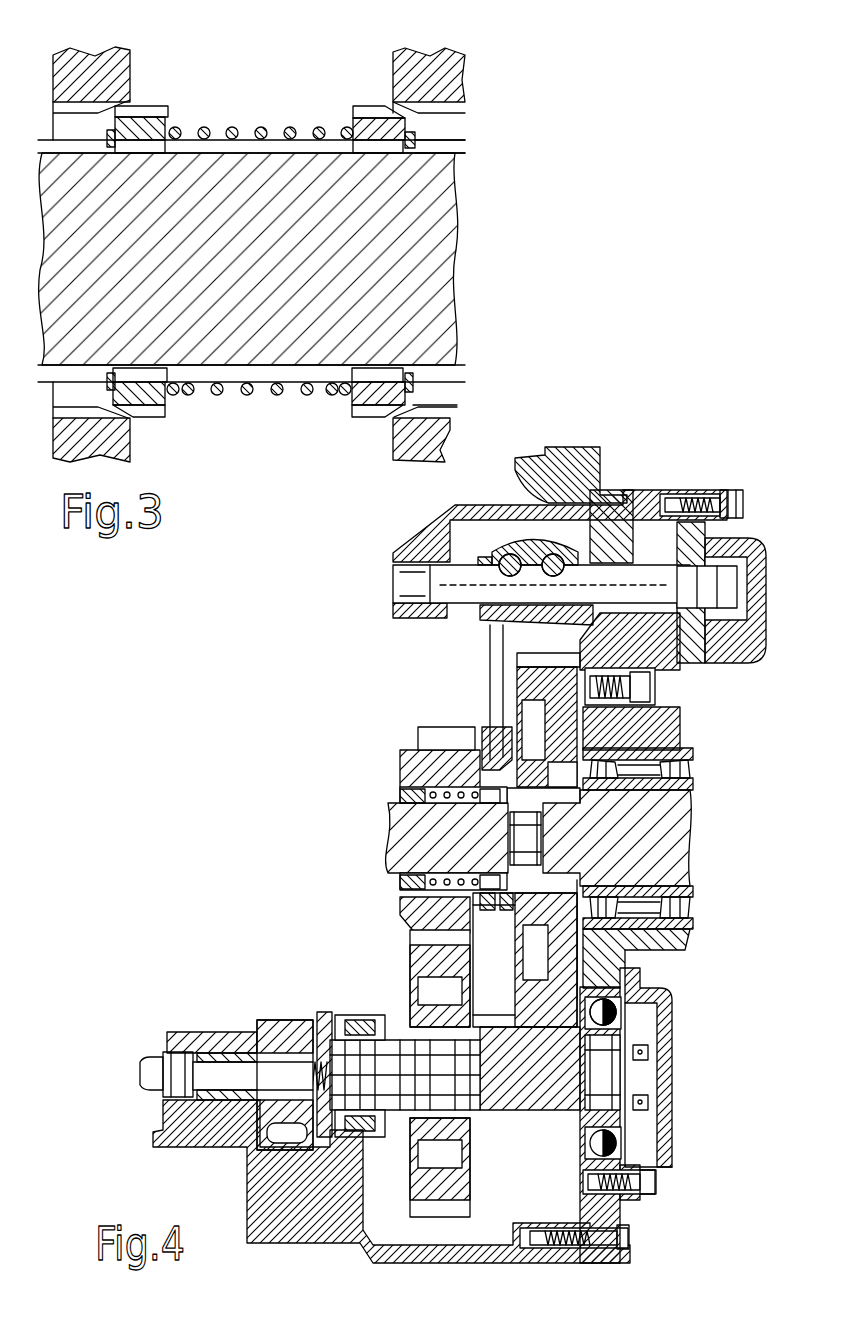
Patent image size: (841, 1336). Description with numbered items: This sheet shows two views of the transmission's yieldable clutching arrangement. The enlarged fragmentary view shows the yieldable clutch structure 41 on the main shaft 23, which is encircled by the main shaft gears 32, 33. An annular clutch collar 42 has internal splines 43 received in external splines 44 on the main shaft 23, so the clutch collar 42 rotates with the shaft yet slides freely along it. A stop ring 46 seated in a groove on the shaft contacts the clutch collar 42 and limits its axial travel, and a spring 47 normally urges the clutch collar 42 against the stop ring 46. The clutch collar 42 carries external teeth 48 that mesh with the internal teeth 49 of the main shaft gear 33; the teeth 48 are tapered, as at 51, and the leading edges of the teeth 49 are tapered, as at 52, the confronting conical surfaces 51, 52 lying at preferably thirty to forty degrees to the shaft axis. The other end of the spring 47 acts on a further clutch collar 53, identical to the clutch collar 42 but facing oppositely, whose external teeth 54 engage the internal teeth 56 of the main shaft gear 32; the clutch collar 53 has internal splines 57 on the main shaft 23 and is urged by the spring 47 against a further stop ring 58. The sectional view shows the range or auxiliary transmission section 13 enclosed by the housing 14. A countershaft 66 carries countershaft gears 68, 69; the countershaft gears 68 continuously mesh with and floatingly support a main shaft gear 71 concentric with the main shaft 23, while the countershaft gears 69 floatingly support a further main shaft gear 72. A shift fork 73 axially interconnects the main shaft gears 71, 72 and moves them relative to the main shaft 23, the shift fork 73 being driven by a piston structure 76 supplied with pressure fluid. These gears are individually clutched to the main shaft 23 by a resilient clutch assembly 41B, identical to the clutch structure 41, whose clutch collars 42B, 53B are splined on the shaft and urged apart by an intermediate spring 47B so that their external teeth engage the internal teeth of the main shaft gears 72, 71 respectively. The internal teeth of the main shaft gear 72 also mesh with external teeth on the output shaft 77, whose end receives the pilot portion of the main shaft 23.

In FIG. 4, the range or auxiliary transmission section 13 is at (372, 742).
In FIG. 4, the housing 14 is at (298, 1247).
In FIG. 3, the main shaft 23 is at (430, 253).
In FIG. 4, the main shaft 23 is at (380, 848).
In FIG. 3, the main shaft gear 32 is at (95, 65).
In FIG. 3, the main shaft gear 33 is at (430, 82).
In FIG. 3, the yieldable clutch structure 41 is at (281, 103).
In FIG. 4, the resilient clutch assembly 41B is at (407, 744).
In FIG. 3, the clutch collar 42 is at (357, 120).
In FIG. 4, the clutch collar 42B is at (487, 905).
In FIG. 3, the internal splines 43 is at (380, 155).
In FIG. 3, the external splines 44 is at (463, 150).
In FIG. 3, the stop ring 46 is at (415, 140).
In FIG. 3, the spring 47 is at (300, 397).
In FIG. 4, the intermediate spring 47B is at (457, 878).
In FIG. 3, the external teeth 48 is at (362, 410).
In FIG. 3, the internal teeth 49 is at (438, 418).
In FIG. 3, the tapered surface 51 is at (418, 388).
In FIG. 3, the tapered surface 52 is at (398, 412).
In FIG. 3, the clutch collar 53 is at (168, 127).
In FIG. 4, the clutch collar 53B is at (400, 793).
In FIG. 3, the external teeth 54 is at (150, 108).
In FIG. 3, the internal teeth 56 is at (67, 110).
In FIG. 3, the internal splines 57 is at (148, 152).
In FIG. 3, the stop ring 58 is at (108, 138).
In FIG. 4, the countershaft 66 is at (497, 1105).
In FIG. 4, the countershaft gear 68 is at (413, 1214).
In FIG. 4, the countershaft gear 69 is at (536, 1150).
In FIG. 4, the main shaft gear 71 is at (425, 902).
In FIG. 4, the main shaft gear 72 is at (530, 987).
In FIG. 4, the shift fork 73 is at (490, 657).
In FIG. 4, the piston structure 76 is at (652, 552).
In FIG. 4, the output shaft 77 is at (650, 838).